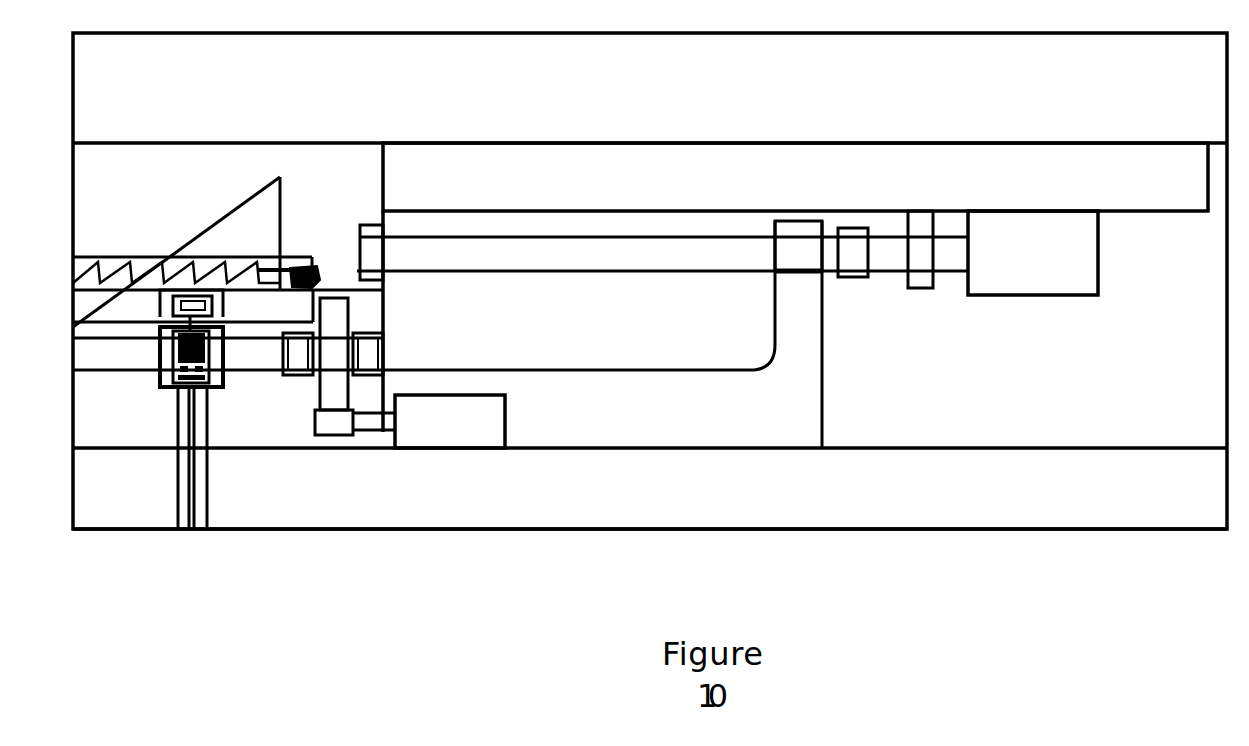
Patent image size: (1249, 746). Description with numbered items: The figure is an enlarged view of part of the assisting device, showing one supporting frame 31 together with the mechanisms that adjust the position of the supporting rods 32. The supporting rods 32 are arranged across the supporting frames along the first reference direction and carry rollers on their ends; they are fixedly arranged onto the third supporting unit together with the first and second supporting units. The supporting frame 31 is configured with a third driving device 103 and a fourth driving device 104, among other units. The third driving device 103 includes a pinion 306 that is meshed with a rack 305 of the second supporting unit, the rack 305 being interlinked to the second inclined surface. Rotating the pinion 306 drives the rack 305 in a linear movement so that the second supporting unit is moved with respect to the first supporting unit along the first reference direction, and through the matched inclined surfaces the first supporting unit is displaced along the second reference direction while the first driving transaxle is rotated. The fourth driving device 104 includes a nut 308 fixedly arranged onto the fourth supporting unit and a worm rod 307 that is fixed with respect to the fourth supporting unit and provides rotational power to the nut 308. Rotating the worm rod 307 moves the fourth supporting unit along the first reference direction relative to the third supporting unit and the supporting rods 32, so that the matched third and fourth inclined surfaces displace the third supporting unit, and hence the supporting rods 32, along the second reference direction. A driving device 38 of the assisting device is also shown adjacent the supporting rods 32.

The rack 305 is at (292, 265).
The pinion 306 is at (313, 262).
The third driving device 103 is at (325, 272).
The worm rod 307 is at (657, 247).
The nut 308 is at (830, 250).
The fourth driving device 104 is at (808, 256).
The driving device 38 is at (343, 420).
The supporting rods 32 is at (182, 483).
The supporting frame 31 is at (283, 490).